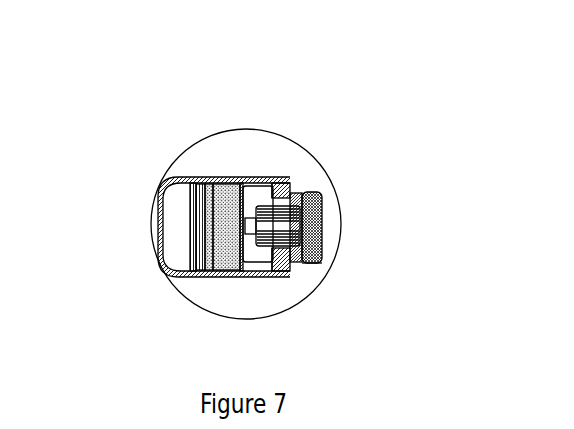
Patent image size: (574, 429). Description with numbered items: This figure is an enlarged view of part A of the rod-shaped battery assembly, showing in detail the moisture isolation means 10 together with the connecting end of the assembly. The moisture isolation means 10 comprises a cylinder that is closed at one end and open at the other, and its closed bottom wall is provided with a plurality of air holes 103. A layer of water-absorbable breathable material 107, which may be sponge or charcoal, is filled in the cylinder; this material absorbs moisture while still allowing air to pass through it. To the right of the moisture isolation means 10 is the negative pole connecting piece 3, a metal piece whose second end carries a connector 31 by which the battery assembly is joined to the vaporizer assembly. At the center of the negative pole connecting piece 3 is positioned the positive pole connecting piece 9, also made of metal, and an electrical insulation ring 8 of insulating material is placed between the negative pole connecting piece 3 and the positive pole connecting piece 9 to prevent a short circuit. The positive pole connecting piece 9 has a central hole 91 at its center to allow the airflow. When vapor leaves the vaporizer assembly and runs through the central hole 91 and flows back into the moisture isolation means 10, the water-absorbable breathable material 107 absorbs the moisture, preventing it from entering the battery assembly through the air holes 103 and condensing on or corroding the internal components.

The part A is at (207, 113).
The moisture isolation means 10 is at (200, 200).
The air holes 103 is at (203, 235).
The water-absorbable breathable material 107 is at (228, 207).
The negative pole connecting piece 3 is at (283, 180).
The electrical insulation ring 8 is at (285, 208).
The central hole 91 is at (303, 223).
The positive pole connecting piece 9 is at (300, 242).
The connector 31 is at (310, 267).